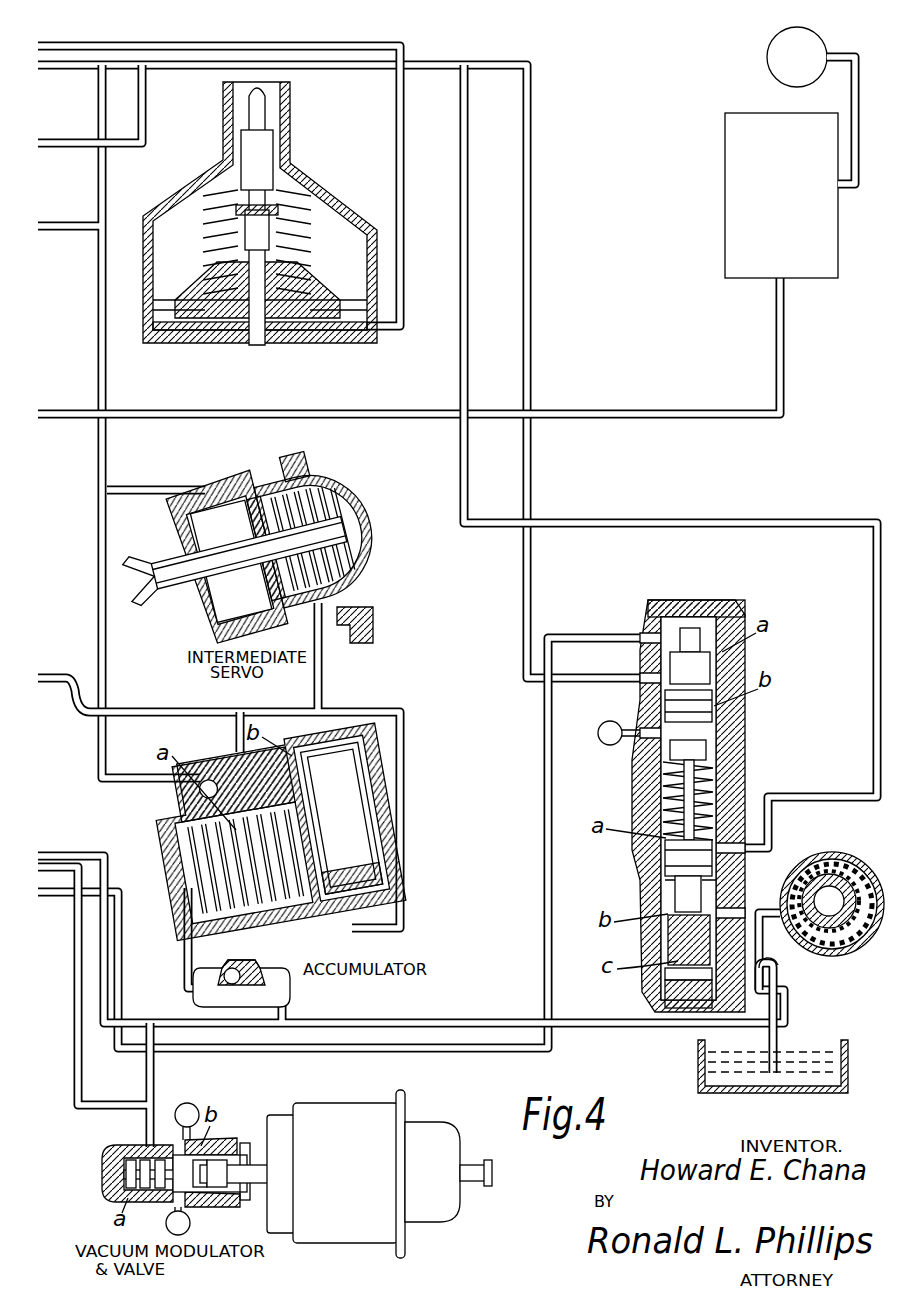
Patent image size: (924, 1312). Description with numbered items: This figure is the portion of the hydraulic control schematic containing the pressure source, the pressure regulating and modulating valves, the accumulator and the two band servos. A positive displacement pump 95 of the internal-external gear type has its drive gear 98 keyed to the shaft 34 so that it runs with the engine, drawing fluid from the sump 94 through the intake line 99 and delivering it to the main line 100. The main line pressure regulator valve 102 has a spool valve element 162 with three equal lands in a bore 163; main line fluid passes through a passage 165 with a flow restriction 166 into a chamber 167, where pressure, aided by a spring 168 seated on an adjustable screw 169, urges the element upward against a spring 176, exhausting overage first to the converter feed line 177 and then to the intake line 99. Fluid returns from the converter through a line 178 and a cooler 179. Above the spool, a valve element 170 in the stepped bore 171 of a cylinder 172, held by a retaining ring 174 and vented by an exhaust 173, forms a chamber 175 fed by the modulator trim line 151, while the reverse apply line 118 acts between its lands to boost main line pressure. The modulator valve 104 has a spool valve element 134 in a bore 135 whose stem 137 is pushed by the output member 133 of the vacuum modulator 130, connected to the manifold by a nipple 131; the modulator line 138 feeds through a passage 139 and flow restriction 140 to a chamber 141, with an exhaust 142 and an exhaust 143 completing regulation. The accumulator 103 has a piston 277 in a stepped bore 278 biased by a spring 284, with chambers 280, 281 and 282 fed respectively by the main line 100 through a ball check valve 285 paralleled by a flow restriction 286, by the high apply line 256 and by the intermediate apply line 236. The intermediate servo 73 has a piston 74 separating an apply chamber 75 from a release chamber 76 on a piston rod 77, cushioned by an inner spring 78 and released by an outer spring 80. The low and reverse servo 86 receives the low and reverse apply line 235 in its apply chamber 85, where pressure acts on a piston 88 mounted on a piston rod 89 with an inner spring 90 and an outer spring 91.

The shaft 34 is at (850, 872).
The intermediate servo 73 is at (356, 486).
The piston 74 is at (352, 523).
The apply chamber 75 is at (372, 548).
The release chamber 76 is at (232, 456).
The piston rod 77 is at (206, 586).
The inner spring 78 is at (302, 510).
The outer spring 80 is at (240, 505).
The apply chamber 85 is at (357, 337).
The low and reverse servo 86 is at (350, 348).
The piston 88 is at (292, 296).
The piston rod 89 is at (290, 192).
The inner spring 90 is at (292, 226).
The outer spring 91 is at (300, 213).
The sump 94 is at (698, 1062).
The pump 95 is at (821, 855).
The drive gear 98 is at (826, 862).
The intake line 99 is at (796, 1005).
The main line 100 is at (64, 894).
The main line pressure regulator valve 102 is at (741, 656).
The accumulator 103 is at (297, 915).
The modulator valve 104 is at (220, 1138).
The reverse apply line 118 is at (85, 144).
The vacuum modulator 130 is at (367, 1112).
The nipple 131 is at (470, 1165).
The output member 133 is at (215, 1171).
The spool valve element 134 is at (126, 1152).
The bore 135 is at (112, 1168).
The stem 137 is at (203, 1160).
The modulator line 138 is at (56, 864).
The passage 139 is at (116, 1196).
The flow restriction 140 is at (155, 1200).
The chamber 141 is at (124, 1178).
The exhaust 142 is at (187, 1103).
The exhaust 143 is at (190, 1222).
The modulator trim line 151 is at (93, 852).
The spool valve element 162 is at (666, 891).
The bore 163 is at (662, 873).
The passage 165 is at (672, 922).
The flow restriction 166 is at (682, 878).
The chamber 167 is at (778, 968).
The spring 168 is at (676, 978).
The screw 169 is at (668, 1003).
The spool valve element 170 is at (680, 690).
The stepped bore 171 is at (700, 628).
The cylinder 172 is at (719, 622).
The exhaust 173 is at (600, 732).
The retaining ring 174 is at (670, 606).
The chamber 175 is at (720, 620).
The spring 176 is at (646, 760).
The converter feed line 177 is at (821, 806).
The line 178 is at (40, 416).
The cooler 179 is at (725, 125).
The low and reverse apply line 235 is at (48, 46).
The intermediate apply line 236 is at (42, 676).
The high apply line 256 is at (60, 68).
The piston 277 is at (120, 70).
The stepped bore 278 is at (265, 778).
The chamber 280 is at (227, 916).
The chamber 281 is at (283, 916).
The chamber 282 is at (318, 831).
The spring 284 is at (182, 822).
The ball check valve 285 is at (210, 992).
The flow restriction 286 is at (230, 1010).